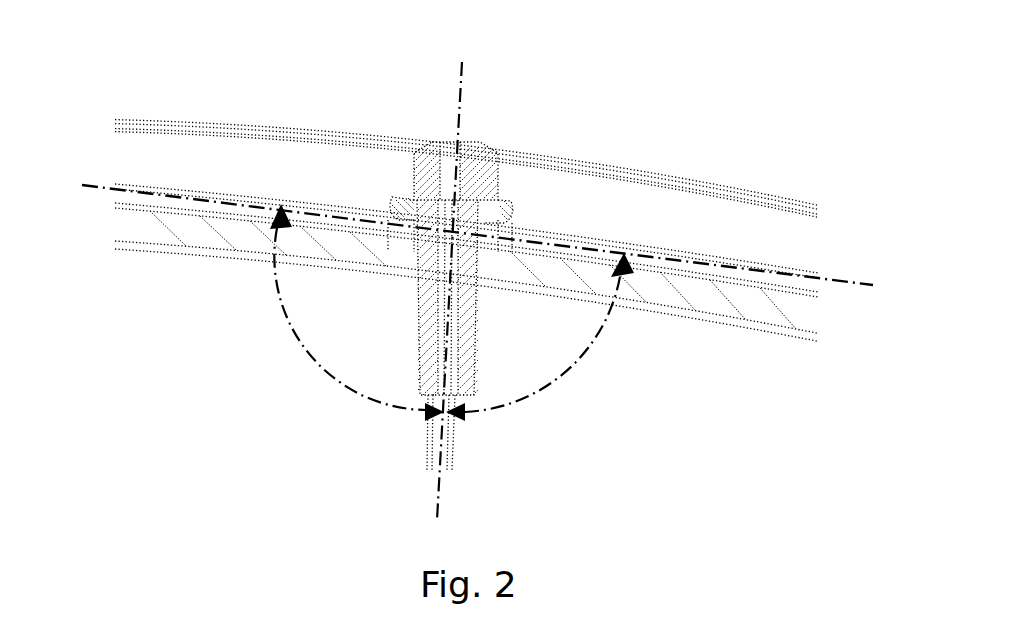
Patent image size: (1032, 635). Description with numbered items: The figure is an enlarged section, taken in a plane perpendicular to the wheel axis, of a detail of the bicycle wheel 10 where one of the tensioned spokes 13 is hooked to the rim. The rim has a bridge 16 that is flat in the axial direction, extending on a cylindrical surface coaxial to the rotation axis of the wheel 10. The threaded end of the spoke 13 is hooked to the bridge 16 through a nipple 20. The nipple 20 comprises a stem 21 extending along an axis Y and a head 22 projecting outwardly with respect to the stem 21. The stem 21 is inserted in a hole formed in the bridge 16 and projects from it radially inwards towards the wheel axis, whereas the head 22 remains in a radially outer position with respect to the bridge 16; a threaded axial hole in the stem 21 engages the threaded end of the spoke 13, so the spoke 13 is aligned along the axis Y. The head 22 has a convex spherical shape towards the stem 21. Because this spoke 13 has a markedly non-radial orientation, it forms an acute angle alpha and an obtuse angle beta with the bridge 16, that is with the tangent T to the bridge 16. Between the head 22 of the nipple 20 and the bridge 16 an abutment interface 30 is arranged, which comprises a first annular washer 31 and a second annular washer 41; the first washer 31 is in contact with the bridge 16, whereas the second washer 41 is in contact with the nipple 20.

The bicycle wheel 10 is at (738, 137).
The spokes 13 is at (427, 452).
The bridge 16 is at (248, 233).
The nipple 20 is at (451, 278).
The stem 21 is at (468, 325).
The head 22 is at (483, 192).
The abutment interface 30 is at (362, 190).
The first annular washer 31 is at (393, 217).
The second annular washer 41 is at (410, 210).